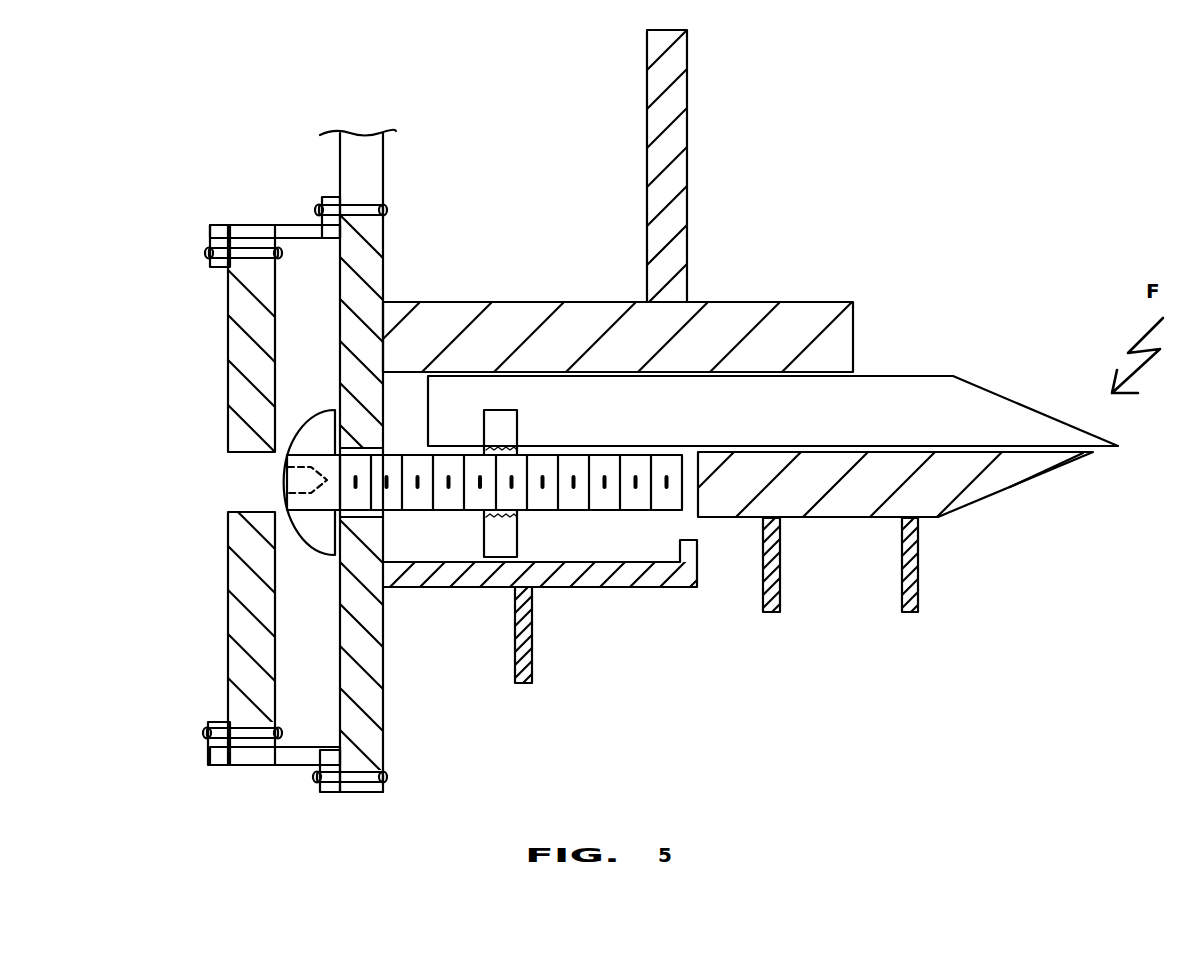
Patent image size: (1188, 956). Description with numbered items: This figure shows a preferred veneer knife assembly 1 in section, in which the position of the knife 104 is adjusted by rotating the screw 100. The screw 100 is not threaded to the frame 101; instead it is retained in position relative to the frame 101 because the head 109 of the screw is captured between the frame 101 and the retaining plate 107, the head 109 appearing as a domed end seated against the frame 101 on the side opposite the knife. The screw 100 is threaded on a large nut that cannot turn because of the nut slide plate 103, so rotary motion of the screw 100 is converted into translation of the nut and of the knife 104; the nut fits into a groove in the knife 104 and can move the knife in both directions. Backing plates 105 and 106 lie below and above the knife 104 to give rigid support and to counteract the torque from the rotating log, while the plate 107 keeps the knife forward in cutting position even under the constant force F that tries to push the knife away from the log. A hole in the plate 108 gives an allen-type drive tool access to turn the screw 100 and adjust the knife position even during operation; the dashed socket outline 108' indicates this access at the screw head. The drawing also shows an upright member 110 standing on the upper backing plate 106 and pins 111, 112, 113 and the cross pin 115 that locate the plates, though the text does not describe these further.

The heat sink assembly 1 is at (340, 160).
The screw 100 is at (455, 512).
The frame 101 is at (383, 132).
The nut slide plate 103 is at (663, 587).
The knife 104 is at (1013, 402).
The backing plate 105 is at (993, 497).
The backing plate 106 is at (573, 302).
The retaining plate 107 is at (228, 330).
The plate 108 is at (266, 640).
The dashed insert 108' is at (234, 474).
The head 109 is at (309, 463).
The vertical post 110 is at (647, 173).
The first pin 111 is at (780, 557).
The second pin 112 is at (918, 563).
The third pin 113 is at (533, 630).
The cross pin 115 is at (697, 545).